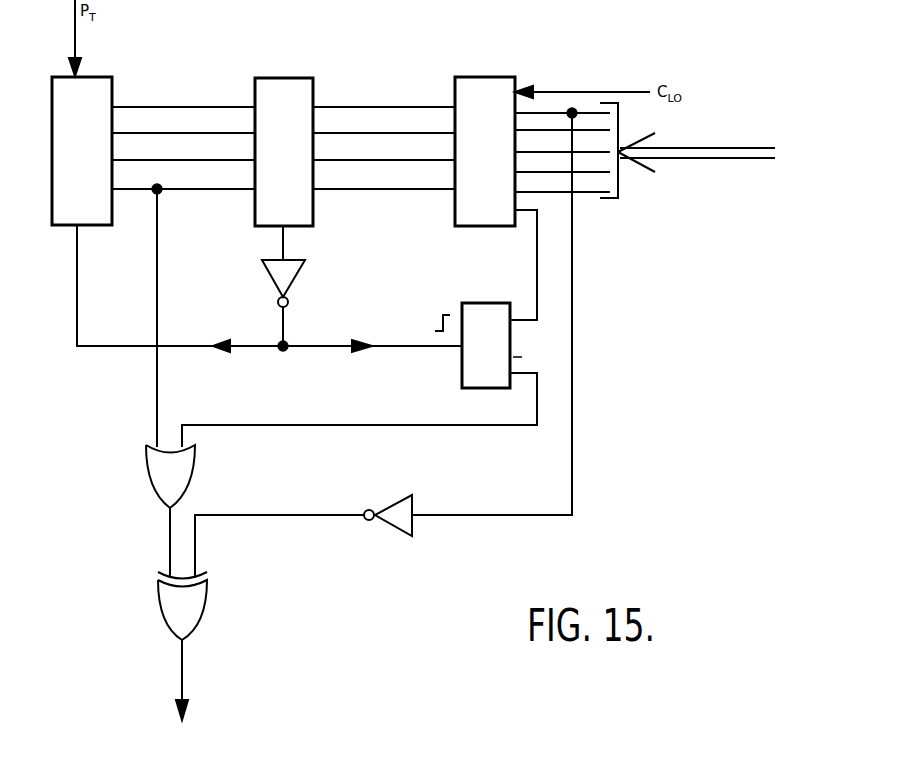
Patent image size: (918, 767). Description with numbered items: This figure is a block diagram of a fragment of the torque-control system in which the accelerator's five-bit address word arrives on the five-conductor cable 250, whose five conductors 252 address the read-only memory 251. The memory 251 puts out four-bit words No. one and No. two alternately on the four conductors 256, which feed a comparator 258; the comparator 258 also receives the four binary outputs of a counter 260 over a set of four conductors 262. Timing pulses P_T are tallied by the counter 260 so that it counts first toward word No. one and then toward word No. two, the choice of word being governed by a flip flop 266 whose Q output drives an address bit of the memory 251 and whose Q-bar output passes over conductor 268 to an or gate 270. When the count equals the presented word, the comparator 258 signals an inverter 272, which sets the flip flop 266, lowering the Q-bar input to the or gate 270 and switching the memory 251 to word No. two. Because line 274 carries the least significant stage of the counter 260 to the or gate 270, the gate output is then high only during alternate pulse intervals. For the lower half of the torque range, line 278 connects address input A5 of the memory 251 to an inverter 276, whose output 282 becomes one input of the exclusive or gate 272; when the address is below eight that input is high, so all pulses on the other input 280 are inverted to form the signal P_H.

The five-conductor cable 250 is at (752, 130).
The read-only memory 251 is at (490, 77).
The conductors 252 is at (553, 130).
The conductors 256 is at (407, 189).
The comparator 258 is at (297, 78).
The counter 260 is at (100, 77).
The conductors 262 is at (183, 133).
The flip flop 266 is at (462, 383).
The conductor 268 is at (233, 424).
The or gate 270 is at (197, 470).
The inverter / exclusive or gate 272 is at (297, 278).
The line 274 is at (157, 288).
The inverter 276 is at (387, 530).
The line 278 is at (572, 460).
The input line 280 is at (170, 550).
The output / input line 282 is at (195, 548).